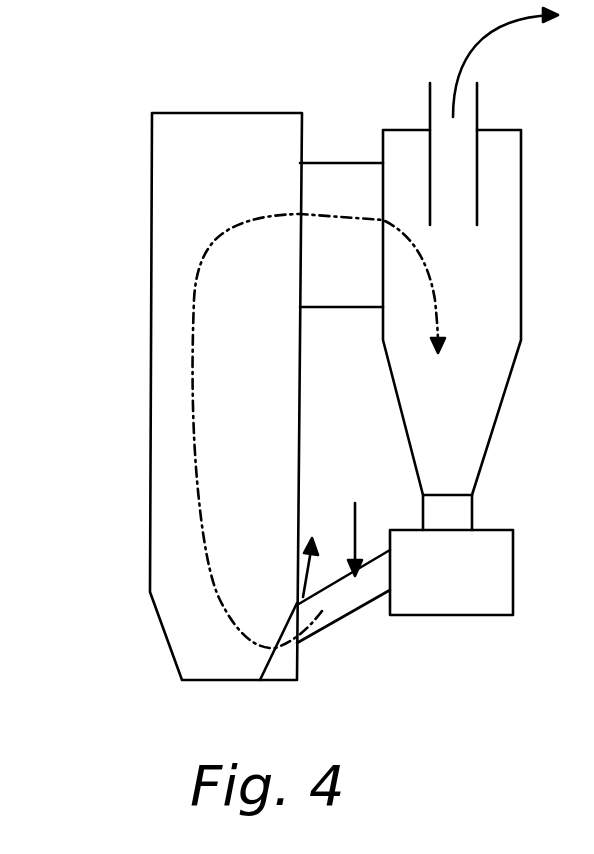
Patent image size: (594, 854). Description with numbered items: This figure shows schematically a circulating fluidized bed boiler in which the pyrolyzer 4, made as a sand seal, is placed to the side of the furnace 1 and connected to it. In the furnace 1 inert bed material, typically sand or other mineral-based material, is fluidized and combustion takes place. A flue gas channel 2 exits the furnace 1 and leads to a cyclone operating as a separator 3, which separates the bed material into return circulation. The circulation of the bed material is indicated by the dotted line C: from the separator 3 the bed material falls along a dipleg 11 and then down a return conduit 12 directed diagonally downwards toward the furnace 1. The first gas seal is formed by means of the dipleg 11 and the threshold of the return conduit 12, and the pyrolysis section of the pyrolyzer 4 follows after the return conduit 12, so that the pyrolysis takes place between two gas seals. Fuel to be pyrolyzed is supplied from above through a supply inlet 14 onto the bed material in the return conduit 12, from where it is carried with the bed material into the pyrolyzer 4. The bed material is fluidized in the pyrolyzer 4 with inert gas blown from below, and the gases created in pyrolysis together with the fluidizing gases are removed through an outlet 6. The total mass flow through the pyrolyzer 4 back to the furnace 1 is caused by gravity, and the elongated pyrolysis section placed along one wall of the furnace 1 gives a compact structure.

The furnace 1 is at (165, 348).
The flue gas channel 2 is at (336, 165).
The separator 3 is at (507, 288).
The pyrolyzer 4 is at (292, 665).
The outlet for gases 6 is at (305, 577).
The dipleg 11 is at (462, 513).
The return conduit 12 is at (342, 622).
The supply inlet 14 is at (355, 503).
The circulation of bed material C is at (197, 480).